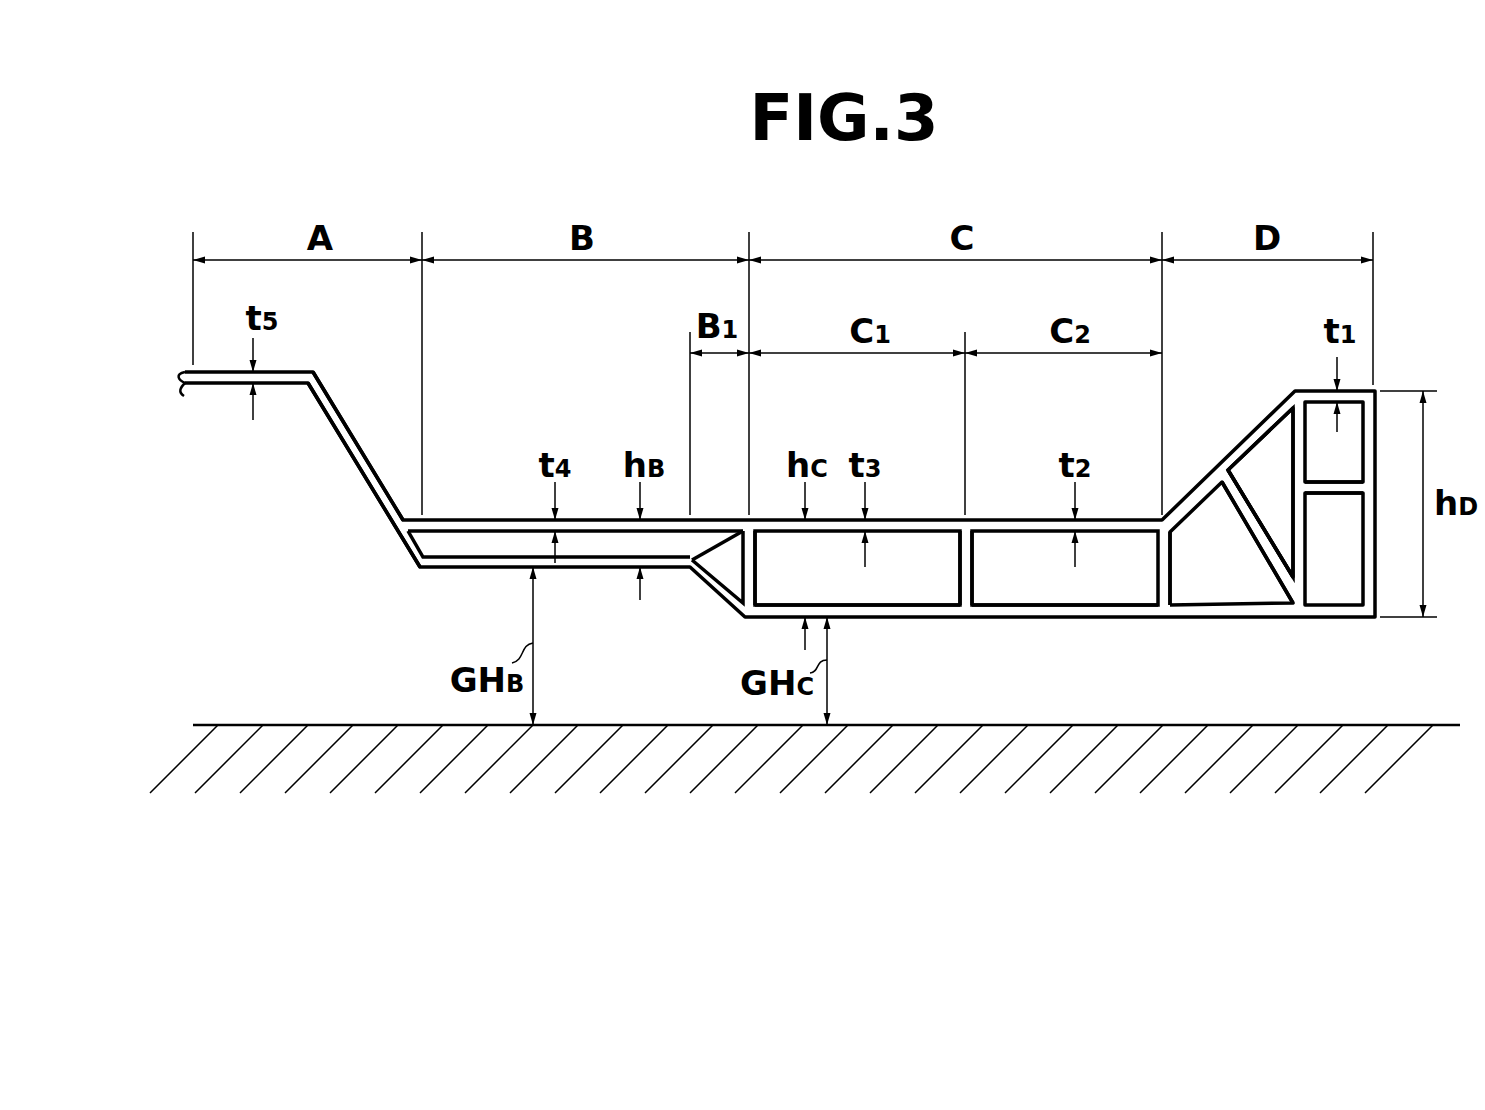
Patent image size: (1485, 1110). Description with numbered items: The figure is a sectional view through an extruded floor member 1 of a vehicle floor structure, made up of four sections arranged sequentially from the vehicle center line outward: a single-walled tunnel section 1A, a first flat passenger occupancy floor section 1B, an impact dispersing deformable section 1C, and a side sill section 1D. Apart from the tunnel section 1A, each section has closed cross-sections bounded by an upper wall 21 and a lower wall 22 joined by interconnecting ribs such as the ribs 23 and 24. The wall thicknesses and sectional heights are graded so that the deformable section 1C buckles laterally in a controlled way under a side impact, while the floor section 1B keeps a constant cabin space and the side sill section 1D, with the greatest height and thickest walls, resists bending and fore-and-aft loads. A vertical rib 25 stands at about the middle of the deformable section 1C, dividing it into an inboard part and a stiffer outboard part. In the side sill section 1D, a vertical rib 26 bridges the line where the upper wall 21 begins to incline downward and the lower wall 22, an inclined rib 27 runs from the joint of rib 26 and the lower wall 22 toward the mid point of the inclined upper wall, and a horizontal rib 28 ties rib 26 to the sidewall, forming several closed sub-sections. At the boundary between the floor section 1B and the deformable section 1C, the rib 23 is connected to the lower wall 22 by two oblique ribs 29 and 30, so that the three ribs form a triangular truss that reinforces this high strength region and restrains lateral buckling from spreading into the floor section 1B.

The extruded floor member 1 is at (1407, 363).
The tunnel section 1A is at (343, 465).
The first flat passenger occupancy floor section 1B is at (447, 569).
The impact dispersing deformable section 1C is at (935, 620).
The side sill section 1D is at (1275, 621).
The upper wall 21 is at (507, 519).
The lower wall 22 is at (1093, 622).
The rib 23 is at (757, 572).
The rib 24 is at (1172, 578).
The vertical rib 25 is at (980, 575).
The vertical rib 26 is at (1293, 442).
The inclined rib 27 is at (1250, 497).
The horizontal rib 28 is at (1332, 500).
The oblique rib 29 is at (692, 546).
The oblique rib 30 is at (714, 589).